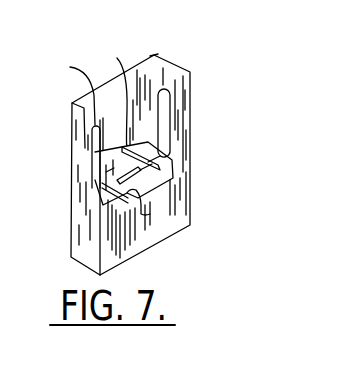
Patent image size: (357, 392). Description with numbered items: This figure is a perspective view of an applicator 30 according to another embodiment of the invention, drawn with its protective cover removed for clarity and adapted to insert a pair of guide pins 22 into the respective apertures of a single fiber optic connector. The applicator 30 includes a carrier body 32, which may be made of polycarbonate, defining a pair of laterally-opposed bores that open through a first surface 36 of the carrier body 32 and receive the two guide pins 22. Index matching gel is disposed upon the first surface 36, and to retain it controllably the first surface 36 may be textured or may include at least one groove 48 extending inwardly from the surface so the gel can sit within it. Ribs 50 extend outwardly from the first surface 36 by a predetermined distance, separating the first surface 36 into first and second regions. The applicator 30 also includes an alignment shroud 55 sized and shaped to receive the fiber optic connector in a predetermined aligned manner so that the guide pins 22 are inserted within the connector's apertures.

The applicator 30 is at (224, 49).
The carrier body 32 is at (72, 215).
The guide pins 22 is at (180, 45).
The groove 48 is at (122, 154).
The ribs 50 is at (141, 214).
The first surface 36 is at (160, 163).
The alignment shroud 55 is at (155, 55).